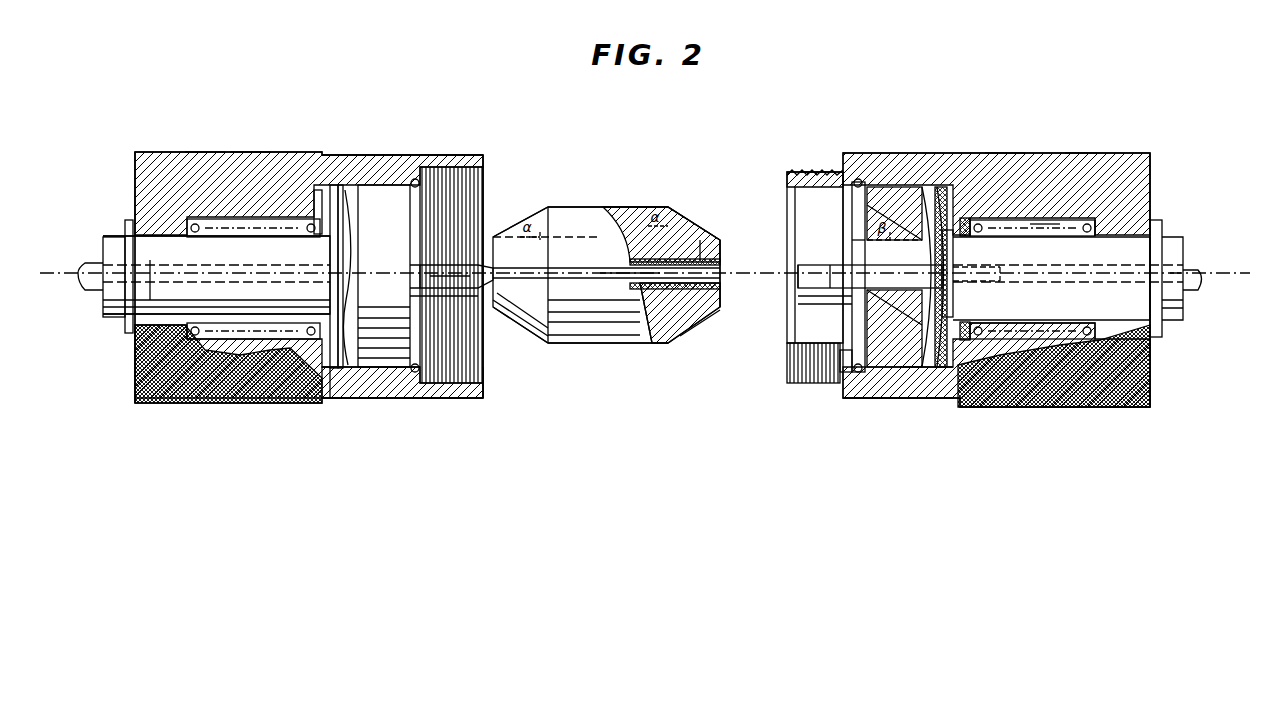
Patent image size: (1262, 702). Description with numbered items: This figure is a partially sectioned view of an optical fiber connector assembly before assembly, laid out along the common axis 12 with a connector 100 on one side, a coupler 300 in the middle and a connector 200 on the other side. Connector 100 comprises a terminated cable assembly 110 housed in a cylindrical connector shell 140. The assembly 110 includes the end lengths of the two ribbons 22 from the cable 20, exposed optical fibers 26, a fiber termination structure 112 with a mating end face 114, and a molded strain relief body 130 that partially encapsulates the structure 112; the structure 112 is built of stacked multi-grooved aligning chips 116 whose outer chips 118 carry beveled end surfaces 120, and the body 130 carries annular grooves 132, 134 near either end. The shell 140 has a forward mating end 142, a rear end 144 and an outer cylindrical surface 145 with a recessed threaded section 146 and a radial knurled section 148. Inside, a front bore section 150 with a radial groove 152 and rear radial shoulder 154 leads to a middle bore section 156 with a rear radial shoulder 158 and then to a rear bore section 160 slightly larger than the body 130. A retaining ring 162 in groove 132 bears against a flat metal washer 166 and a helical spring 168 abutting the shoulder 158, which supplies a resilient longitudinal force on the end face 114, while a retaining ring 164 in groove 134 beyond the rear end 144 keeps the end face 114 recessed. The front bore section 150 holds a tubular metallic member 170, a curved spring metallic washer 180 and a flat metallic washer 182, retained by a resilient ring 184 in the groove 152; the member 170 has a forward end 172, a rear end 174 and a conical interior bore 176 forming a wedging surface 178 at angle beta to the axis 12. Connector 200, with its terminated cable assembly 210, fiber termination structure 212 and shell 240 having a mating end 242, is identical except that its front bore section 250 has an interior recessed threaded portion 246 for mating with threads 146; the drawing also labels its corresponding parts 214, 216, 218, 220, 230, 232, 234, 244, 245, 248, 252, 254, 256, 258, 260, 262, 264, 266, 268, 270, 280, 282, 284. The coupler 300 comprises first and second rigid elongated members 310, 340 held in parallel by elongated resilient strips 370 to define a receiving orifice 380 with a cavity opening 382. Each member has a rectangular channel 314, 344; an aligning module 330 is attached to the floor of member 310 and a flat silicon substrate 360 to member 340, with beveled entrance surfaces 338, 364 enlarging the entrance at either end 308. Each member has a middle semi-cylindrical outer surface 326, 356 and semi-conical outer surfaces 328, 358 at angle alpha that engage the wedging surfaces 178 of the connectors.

The axis 12 is at (52, 273).
The two-ribbon cable 20 is at (86, 288).
The optical fiber ribbon 22 is at (1178, 282).
The optical fibers 26 is at (248, 265).
The connector 100 is at (1060, 408).
The terminated cable assembly 110 is at (1180, 238).
The fiber termination structure 112 is at (990, 282).
The mating end face 114 is at (798, 272).
The aligning chips 116 is at (835, 265).
The outer chips 118 is at (800, 300).
The beveled end surfaces 120 is at (802, 265).
The molded strain relief body 130 is at (1184, 300).
The annular groove 132 is at (953, 257).
The annular groove 134 is at (1153, 258).
The connector shell 140 is at (1040, 153).
The forward mating end 142 is at (787, 177).
The rear end 144 is at (1150, 160).
The outer cylindrical surface 145 is at (1000, 153).
The recessed threaded section 146 is at (818, 172).
The radial knurled section 148 is at (1075, 153).
The front bore section 150 is at (797, 190).
The radial groove 152 is at (862, 180).
The rear radial shoulder 154 is at (946, 195).
The middle bore section 156 is at (1000, 220).
The rear radial shoulder 158 is at (1097, 228).
The rear bore section 160 is at (1150, 352).
The retaining ring 162 is at (965, 218).
The retaining ring 164 is at (1158, 222).
The flat metal washer 166 is at (985, 265).
The helical spring 168 is at (1045, 226).
The tubular metallic member 170 is at (860, 398).
The forward end 172 is at (838, 375).
The rear end 174 is at (902, 398).
The interior bore 176 is at (877, 315).
The interior conical wedging surface 178 is at (852, 232).
The curved spring metallic washer 180 is at (902, 185).
The flat metallic washer 182 is at (932, 187).
The resilient ring 184 is at (852, 216).
The connector 200 is at (135, 386).
The terminated cable assembly 210 is at (103, 262).
The fiber termination structure 212 is at (420, 300).
The spindle 214 is at (488, 262).
The spindle groove 216 is at (425, 284).
The spindle shoulder 218 is at (422, 268).
The end face 220 is at (485, 172).
The shaft 230 is at (103, 313).
The shaft portion 232 is at (322, 248).
The collar 234 is at (112, 240).
The connector shell 240 is at (140, 152).
The mating end 242 is at (483, 383).
The housing wall 244 is at (135, 172).
The housing top 245 is at (237, 152).
The interior recessed threaded portion 246 is at (438, 398).
The housing portion 248 is at (193, 152).
The front bore section 250 is at (470, 157).
The threads 252 is at (445, 167).
The plate 254 is at (316, 210).
The bearing 256 is at (262, 343).
The bearing 258 is at (187, 219).
The shaft groove 260 is at (160, 312).
The lower block 262 is at (340, 400).
The plate 264 is at (128, 220).
The spacer 266 is at (322, 400).
The filler 268 is at (140, 404).
The piston 270 is at (380, 187).
The plate 280 is at (341, 187).
The plate 282 is at (333, 190).
The O-ring 284 is at (413, 179).
The coupler 300 is at (640, 344).
The end of the coupler 308 is at (495, 316).
The first rigid elongated member 310 is at (600, 344).
The channel 314 is at (656, 290).
The middle semi-cylindrical outer surface 326 is at (566, 344).
The semi-conical outer surfaces 328 is at (527, 347).
The aligning module 330 is at (684, 290).
The beveled entrance surfaces 338 is at (720, 287).
The second rigid elongated member 340 is at (610, 206).
The channel 344 is at (692, 222).
The middle semi-cylindrical outer surface 356 is at (588, 206).
The semi-conical outer surfaces 358 is at (518, 224).
The silicon substrate 360 is at (665, 225).
The beveled entrance surfaces 364 is at (722, 245).
The elongated strips 370 is at (614, 276).
The fiber termination structure receiving orifice 380 is at (636, 286).
The cavity opening 382 is at (720, 262).